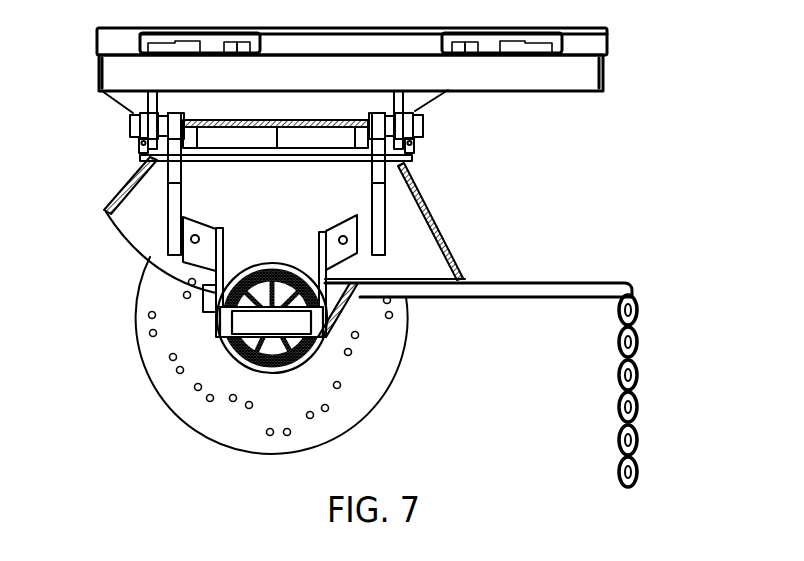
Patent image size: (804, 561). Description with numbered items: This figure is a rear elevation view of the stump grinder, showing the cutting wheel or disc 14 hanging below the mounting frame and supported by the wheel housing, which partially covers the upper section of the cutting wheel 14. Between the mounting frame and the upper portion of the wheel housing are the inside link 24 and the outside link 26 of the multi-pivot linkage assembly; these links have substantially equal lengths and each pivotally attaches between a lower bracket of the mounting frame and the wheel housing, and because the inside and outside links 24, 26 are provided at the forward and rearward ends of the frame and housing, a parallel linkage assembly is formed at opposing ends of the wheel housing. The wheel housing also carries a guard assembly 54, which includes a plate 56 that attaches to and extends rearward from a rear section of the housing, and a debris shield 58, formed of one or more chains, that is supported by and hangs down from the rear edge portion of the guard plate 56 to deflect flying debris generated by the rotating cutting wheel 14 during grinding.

The cutting wheel or disc 14 is at (192, 398).
The inside link 24 is at (137, 146).
The outside link 26 is at (130, 123).
The guard assembly 54 is at (516, 357).
The plate 56 is at (542, 283).
The debris shield 58 is at (638, 409).